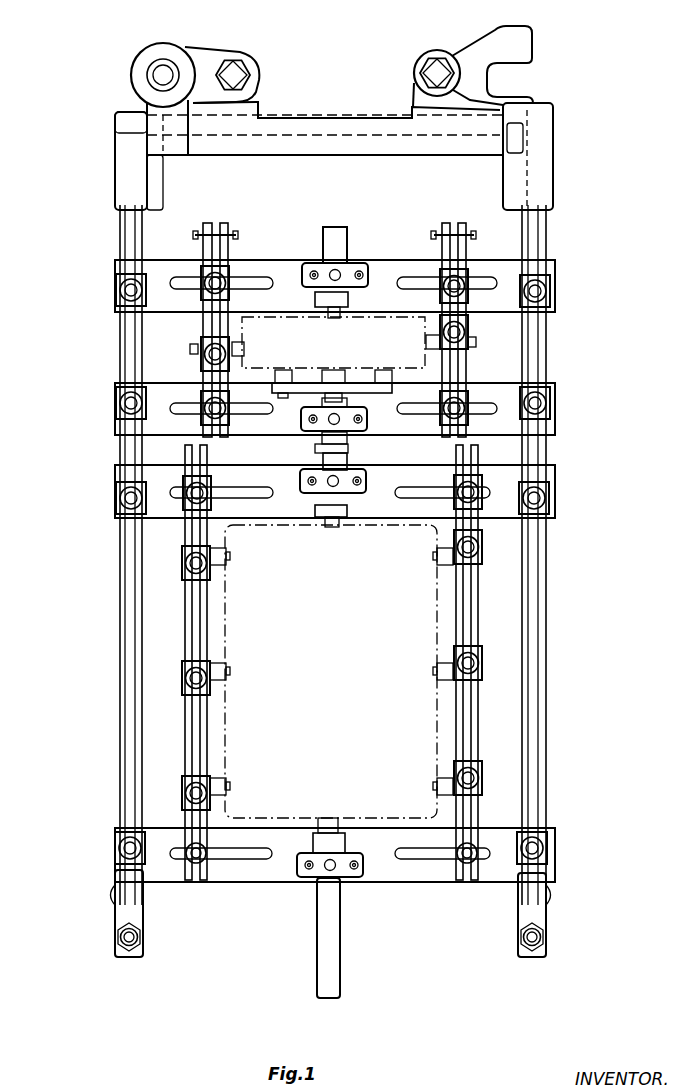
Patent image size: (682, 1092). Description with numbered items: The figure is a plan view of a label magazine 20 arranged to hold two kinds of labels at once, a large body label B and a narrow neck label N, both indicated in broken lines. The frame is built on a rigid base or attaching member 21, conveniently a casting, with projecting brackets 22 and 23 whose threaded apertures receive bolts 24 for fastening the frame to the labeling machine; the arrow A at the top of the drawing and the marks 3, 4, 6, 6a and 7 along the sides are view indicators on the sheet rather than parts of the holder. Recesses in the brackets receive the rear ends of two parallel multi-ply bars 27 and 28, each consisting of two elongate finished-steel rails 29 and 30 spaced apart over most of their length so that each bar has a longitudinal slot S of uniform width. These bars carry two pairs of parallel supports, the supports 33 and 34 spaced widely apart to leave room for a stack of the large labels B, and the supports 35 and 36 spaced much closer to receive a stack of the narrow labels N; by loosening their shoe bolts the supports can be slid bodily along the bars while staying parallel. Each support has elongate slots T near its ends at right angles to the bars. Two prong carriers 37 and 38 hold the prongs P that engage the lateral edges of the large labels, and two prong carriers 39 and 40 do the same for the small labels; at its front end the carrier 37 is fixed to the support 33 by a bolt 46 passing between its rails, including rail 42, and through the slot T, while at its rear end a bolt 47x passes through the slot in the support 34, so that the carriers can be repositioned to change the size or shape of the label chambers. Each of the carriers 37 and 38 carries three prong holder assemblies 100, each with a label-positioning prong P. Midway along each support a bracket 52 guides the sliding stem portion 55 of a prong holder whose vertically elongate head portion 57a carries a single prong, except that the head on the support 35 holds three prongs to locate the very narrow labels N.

The label magazine 20 is at (592, 297).
The base or attaching member 21 is at (342, 122).
The projecting bracket 22 is at (202, 58).
The projecting bracket 23 is at (472, 62).
The bolt 24 is at (238, 70).
The multi-ply bar 27 is at (562, 672).
The multi-ply bar 28 is at (112, 733).
The rail 29 is at (526, 742).
The rail 30 is at (546, 712).
The support 33 is at (243, 870).
The support 34 is at (296, 510).
The support 35 is at (140, 438).
The support 36 is at (175, 266).
The prong carrier 37 is at (445, 738).
The prong carrier 38 is at (215, 741).
The prong carrier 39 is at (482, 373).
The prong carrier 40 is at (186, 332).
The rail 42 is at (473, 703).
The bolt 46 is at (465, 860).
The bolt 47x is at (460, 487).
The bracket 52 is at (352, 272).
The stem portion 55 is at (320, 965).
The head portion 57a is at (358, 383).
The prong holder assembly 100 is at (495, 646).
The direction arrow A is at (343, 60).
The body label B is at (420, 632).
The neck label N is at (410, 353).
The label-positioning prong P is at (335, 312).
The slot S is at (128, 800).
The elongate slot T is at (417, 280).
The section line 3 is at (453, 797).
The section line 4 is at (464, 860).
The section line 6 is at (528, 909).
The section line 6a is at (539, 518).
The section line 7 is at (323, 914).